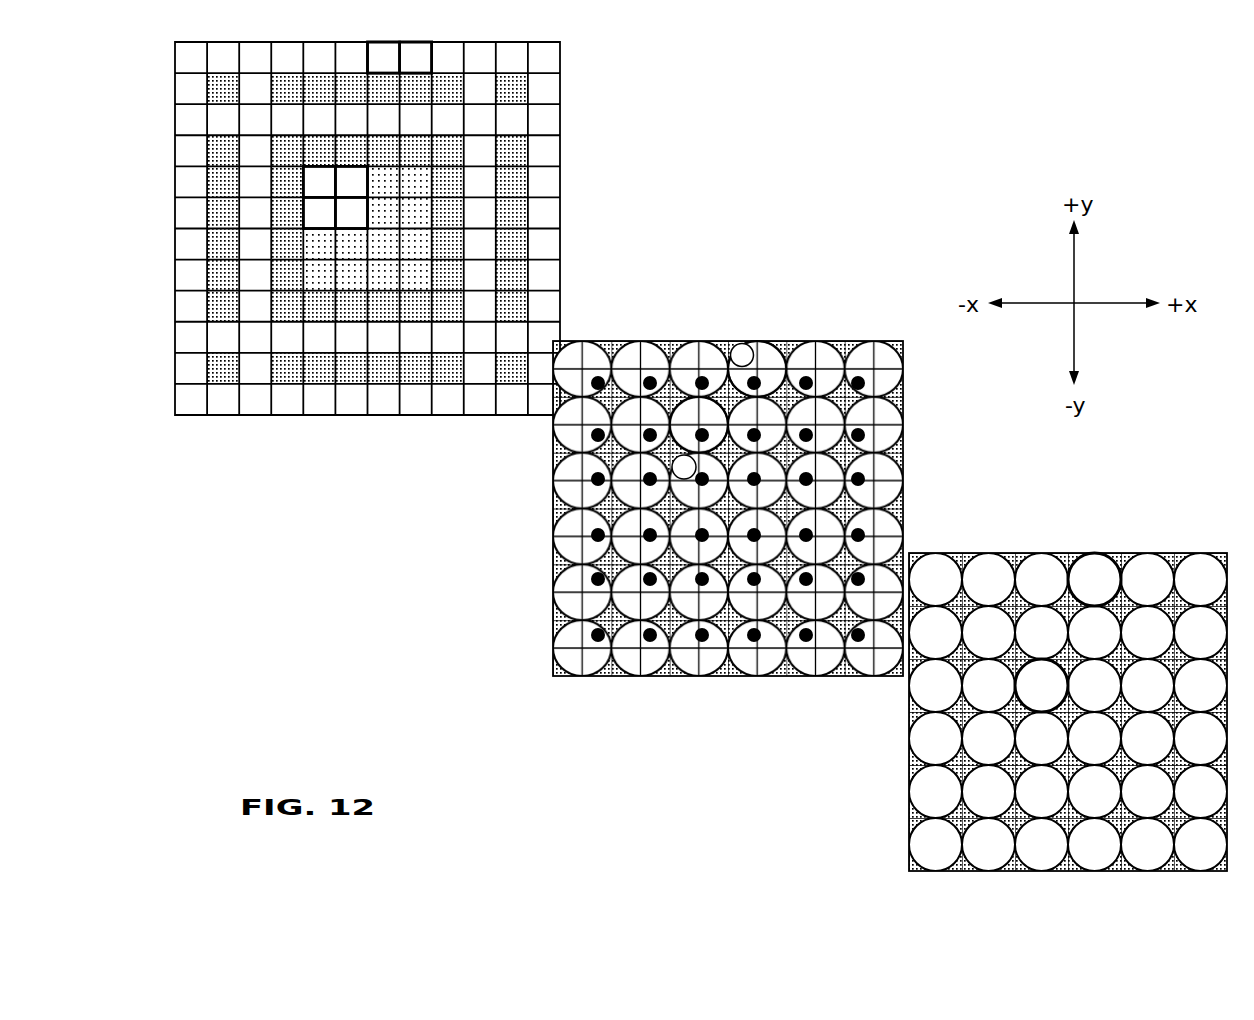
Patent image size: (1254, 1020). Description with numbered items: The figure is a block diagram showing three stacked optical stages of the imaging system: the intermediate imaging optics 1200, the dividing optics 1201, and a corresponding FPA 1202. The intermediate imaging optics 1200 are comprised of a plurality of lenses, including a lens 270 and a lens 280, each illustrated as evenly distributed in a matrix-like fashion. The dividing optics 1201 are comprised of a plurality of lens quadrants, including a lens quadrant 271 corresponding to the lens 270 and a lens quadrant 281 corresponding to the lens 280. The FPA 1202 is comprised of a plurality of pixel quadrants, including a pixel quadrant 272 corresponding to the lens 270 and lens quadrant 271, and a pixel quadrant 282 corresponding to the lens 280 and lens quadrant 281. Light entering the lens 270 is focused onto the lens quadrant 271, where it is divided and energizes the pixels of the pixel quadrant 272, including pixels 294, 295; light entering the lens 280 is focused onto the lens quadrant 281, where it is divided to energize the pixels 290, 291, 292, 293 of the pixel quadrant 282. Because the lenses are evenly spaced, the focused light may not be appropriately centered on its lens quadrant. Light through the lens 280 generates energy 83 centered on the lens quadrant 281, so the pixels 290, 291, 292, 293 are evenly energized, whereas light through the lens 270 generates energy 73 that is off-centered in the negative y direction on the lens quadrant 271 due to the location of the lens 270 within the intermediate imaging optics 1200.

The intermediate imaging optics 1200 is at (1218, 550).
The dividing optics 1201 is at (897, 338).
The FPA 1202 is at (547, 41).
The lens 270 is at (1111, 591).
The lens 280 is at (1058, 697).
The lens quadrant 271 is at (745, 343).
The lens quadrant 281 is at (675, 440).
The energy 73 is at (742, 354).
The energy 83 is at (702, 472).
The pixel quadrant 272 is at (422, 42).
The pixel quadrant 282 is at (322, 165).
The pixel 290 is at (333, 194).
The pixel 291 is at (365, 194).
The pixel 292 is at (333, 224).
The pixel 293 is at (365, 224).
The pixel 294 is at (397, 70).
The pixel 295 is at (429, 70).